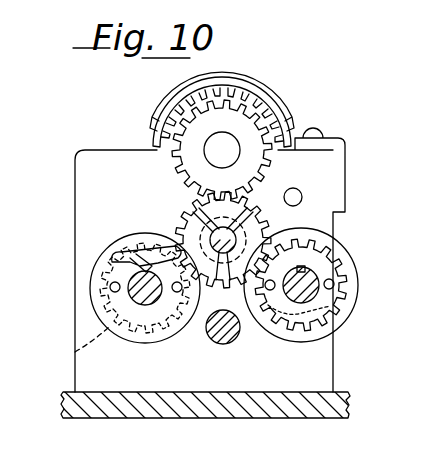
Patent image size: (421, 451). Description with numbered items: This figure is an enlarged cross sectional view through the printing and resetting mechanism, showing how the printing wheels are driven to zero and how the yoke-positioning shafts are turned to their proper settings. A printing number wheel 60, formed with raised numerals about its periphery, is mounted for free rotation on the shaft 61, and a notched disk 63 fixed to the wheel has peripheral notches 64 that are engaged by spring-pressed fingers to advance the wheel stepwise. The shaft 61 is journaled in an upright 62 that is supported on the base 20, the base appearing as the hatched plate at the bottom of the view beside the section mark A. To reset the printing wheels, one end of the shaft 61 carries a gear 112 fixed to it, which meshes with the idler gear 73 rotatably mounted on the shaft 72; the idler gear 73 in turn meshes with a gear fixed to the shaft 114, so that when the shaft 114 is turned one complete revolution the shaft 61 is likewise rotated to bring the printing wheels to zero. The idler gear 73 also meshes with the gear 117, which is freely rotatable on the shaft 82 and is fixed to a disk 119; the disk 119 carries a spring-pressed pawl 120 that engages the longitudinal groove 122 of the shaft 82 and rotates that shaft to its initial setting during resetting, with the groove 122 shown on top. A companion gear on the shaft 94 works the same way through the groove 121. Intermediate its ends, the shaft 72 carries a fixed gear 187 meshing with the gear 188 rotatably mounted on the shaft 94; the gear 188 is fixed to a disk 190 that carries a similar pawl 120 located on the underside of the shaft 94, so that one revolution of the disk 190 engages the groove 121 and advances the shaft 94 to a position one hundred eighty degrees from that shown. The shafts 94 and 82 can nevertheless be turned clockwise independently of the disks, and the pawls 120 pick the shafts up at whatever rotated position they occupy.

The shaft 61 is at (218, 136).
The printing number wheel 60 is at (241, 88).
The notched disk 63 is at (266, 106).
The gear 112 is at (182, 116).
The peripheral notch 64 is at (158, 129).
The upright 62 is at (85, 150).
The gear 187 is at (268, 210).
The idler gear 73 is at (196, 207).
The shaft 72 is at (210, 238).
The longitudinal groove 121 is at (303, 267).
The gear 188 is at (312, 258).
The shaft 94 is at (322, 279).
The disk 190 is at (345, 310).
The spring-pressed pawl 120 is at (110, 258).
The disk 119 is at (93, 273).
The longitudinal groove 122 is at (127, 292).
The shaft 82 is at (107, 316).
The gear 117 is at (75, 352).
The shaft 114 is at (214, 341).
The base 20 is at (66, 396).
The section line A is at (56, 416).